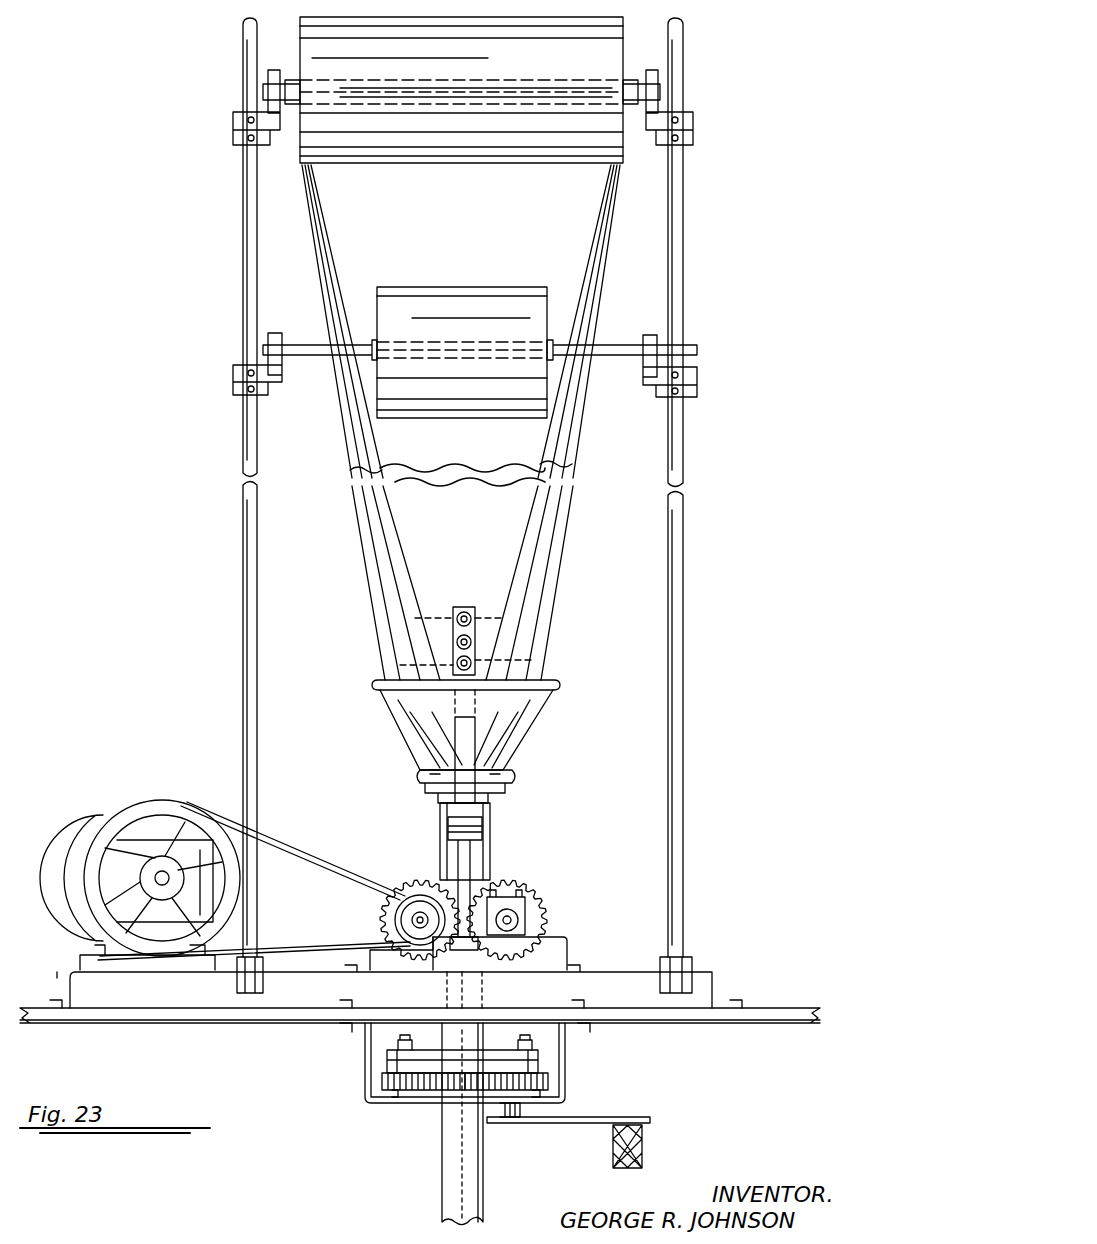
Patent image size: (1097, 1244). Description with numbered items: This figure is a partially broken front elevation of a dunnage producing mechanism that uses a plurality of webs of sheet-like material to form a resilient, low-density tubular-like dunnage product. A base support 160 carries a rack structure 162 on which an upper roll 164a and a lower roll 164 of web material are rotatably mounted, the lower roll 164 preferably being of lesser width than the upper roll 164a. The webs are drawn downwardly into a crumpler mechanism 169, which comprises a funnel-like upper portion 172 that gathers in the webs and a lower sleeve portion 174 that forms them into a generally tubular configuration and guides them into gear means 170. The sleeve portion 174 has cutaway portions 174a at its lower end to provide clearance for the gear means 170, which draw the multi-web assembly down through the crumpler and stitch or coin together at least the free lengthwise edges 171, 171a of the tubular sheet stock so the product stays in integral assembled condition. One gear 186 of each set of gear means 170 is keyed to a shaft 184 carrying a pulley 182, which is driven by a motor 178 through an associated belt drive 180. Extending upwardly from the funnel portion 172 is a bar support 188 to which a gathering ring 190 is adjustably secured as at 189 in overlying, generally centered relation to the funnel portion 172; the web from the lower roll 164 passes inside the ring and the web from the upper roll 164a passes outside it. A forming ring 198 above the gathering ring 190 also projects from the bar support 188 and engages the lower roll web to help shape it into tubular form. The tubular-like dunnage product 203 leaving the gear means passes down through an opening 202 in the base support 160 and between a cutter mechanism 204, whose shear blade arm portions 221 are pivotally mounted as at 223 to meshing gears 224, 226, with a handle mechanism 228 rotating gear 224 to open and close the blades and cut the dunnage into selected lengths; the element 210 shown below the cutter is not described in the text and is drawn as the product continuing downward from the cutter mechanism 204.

The base support 160 is at (712, 985).
The rack structure 162 is at (683, 420).
The lower roll 164 is at (475, 287).
The upper roll 164a is at (612, 60).
The crumpler mechanism 169 is at (556, 727).
The gear means 170 is at (568, 905).
The free lengthwise edge 171 is at (506, 548).
The free lengthwise edge 171a is at (625, 222).
The funnel-like upper portion 172 is at (418, 728).
The sleeve portion 174 is at (490, 823).
The cutaway portions 174a is at (440, 888).
The motor 178 is at (128, 800).
The belt drive 180 is at (300, 835).
The pulley 182 is at (432, 950).
The shaft 184 is at (413, 918).
The gear 186 is at (380, 898).
The bar support 188 is at (475, 640).
The adjustable securement 189 is at (453, 657).
The gathering ring 190 is at (530, 661).
The forming ring 198 is at (420, 618).
The opening 202 is at (490, 1005).
The tubular-like dunnage product 203 is at (430, 1148).
The cutter mechanism 204 is at (593, 1073).
The threaded shaft 210 is at (460, 1183).
The arm portions 221 is at (440, 1070).
The pivotal axes 223 is at (395, 1052).
The gear 224 is at (550, 1082).
The gear 226 is at (382, 1083).
The handle mechanism 228 is at (575, 1125).